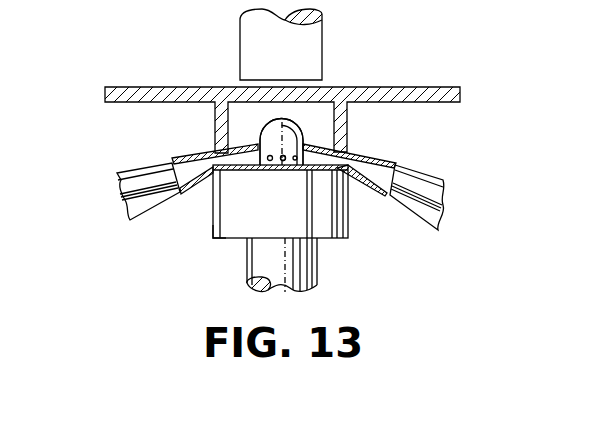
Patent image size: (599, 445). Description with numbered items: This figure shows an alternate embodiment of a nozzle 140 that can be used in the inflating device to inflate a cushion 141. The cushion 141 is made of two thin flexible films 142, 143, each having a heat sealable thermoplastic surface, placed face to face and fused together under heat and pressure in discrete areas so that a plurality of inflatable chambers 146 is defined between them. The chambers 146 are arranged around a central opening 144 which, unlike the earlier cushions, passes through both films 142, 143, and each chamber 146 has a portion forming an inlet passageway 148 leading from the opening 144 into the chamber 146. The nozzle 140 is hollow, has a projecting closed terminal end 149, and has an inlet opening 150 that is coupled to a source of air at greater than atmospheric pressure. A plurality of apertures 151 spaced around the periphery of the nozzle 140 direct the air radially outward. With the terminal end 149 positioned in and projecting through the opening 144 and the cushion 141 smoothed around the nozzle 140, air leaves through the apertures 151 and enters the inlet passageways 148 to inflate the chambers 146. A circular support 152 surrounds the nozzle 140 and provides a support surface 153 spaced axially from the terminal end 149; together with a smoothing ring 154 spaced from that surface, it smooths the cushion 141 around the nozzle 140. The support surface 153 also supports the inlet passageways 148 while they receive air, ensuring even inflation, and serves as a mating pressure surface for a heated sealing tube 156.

The nozzle 140 is at (273, 137).
The cushion 141 is at (427, 172).
The film 142 is at (387, 160).
The film 143 is at (375, 197).
The central opening 144 is at (250, 145).
The inflatable chambers 146 is at (185, 172).
The inlet passageway 148 is at (232, 160).
The terminal end 149 is at (290, 104).
The inlet opening 150 is at (273, 283).
The apertures 151 is at (282, 162).
The circular support 152 is at (217, 232).
The support surface 153 is at (337, 220).
The smoothing ring 154 is at (346, 126).
The heated sealing tube 156 is at (318, 43).